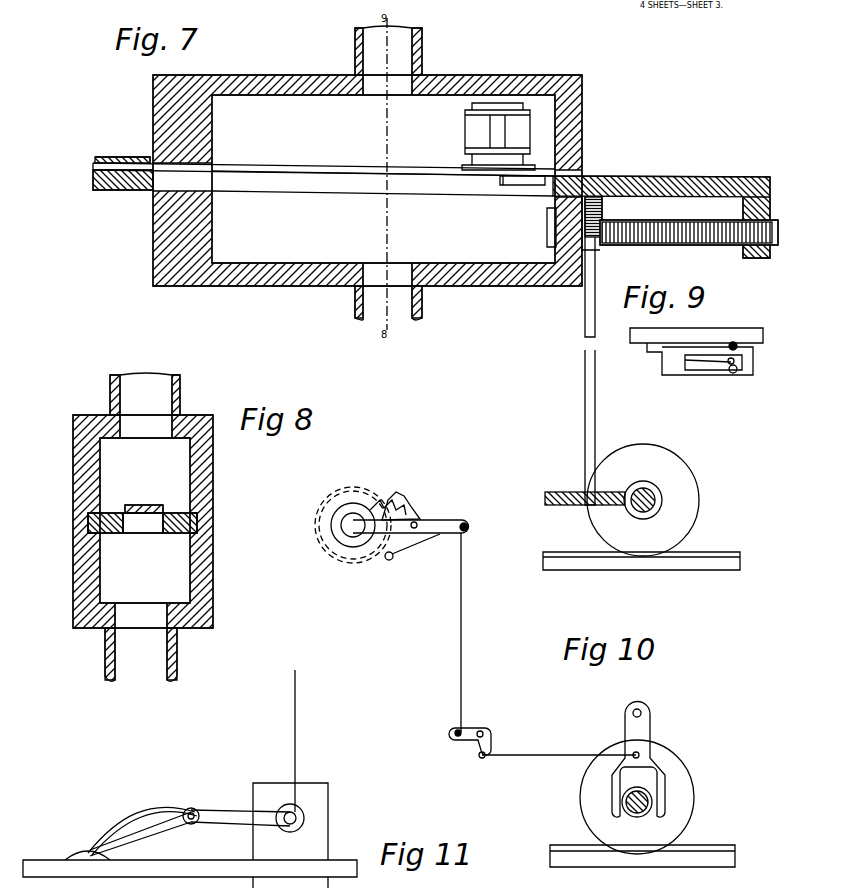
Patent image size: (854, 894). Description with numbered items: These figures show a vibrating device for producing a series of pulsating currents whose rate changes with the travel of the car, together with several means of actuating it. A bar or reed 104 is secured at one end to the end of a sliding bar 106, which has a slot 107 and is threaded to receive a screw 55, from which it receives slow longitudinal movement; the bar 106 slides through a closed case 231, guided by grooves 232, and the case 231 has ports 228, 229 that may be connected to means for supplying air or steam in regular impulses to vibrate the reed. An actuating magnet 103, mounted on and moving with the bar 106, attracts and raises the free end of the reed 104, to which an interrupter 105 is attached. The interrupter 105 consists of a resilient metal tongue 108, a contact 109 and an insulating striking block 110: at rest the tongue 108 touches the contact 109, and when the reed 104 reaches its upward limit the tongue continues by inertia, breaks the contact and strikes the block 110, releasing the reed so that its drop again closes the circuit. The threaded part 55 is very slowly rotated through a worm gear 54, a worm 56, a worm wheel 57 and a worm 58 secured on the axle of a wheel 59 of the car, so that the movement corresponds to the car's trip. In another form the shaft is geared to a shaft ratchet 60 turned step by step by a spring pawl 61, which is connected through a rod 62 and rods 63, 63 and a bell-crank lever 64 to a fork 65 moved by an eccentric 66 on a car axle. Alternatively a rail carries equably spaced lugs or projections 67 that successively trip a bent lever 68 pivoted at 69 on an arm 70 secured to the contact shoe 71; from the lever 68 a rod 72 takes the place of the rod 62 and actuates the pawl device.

In FIG. 7, the worm gear 54 is at (603, 212).
In FIG. 7, the threaded part 55 is at (689, 222).
In FIG. 7, the worm 56 is at (598, 238).
In FIG. 7, the worm wheel 57 is at (572, 505).
In FIG. 7, the worm 58 is at (641, 510).
In FIG. 7, the wheel 59 is at (693, 515).
In FIG. 7, the shaft ratchet 60 is at (368, 548).
In FIG. 7, the spring pawl 61 is at (416, 521).
In FIG. 7, the rod 62 is at (460, 665).
In FIG. 10, the rods 63 is at (535, 756).
In FIG. 10, the bell-crank lever 64 is at (489, 736).
In FIG. 10, the fork 65 is at (648, 732).
In FIG. 10, the eccentric 66 is at (626, 802).
In FIG. 11, the lugs or projections 67 is at (78, 856).
In FIG. 11, the bent lever 68 is at (190, 833).
In FIG. 11, the pivot 69 is at (191, 808).
In FIG. 11, the arm 70 is at (142, 823).
In FIG. 11, the contact shoe 71 is at (301, 835).
In FIG. 11, the rod 72 is at (295, 733).
In FIG. 7, the actuating magnet 103 is at (472, 124).
In FIG. 9, the actuating magnet 103 is at (697, 376).
In FIG. 7, the vibrating bar or reed 104 is at (294, 165).
In FIG. 8, the vibrating bar or reed 104 is at (162, 505).
In FIG. 9, the vibrating bar or reed 104 is at (705, 334).
In FIG. 7, the interrupter 105 is at (528, 185).
In FIG. 7, the sliding bar 106 is at (648, 168).
In FIG. 8, the sliding bar 106 is at (183, 532).
In FIG. 8, the slot 107 is at (137, 518).
In FIG. 9, the resilient metal tongue 108 is at (737, 361).
In FIG. 9, the contact 109 is at (734, 373).
In FIG. 9, the insulating striking block 110 is at (736, 343).
In FIG. 7, the port 228 is at (403, 65).
In FIG. 8, the port 228 is at (125, 390).
In FIG. 7, the port 229 is at (406, 305).
In FIG. 8, the port 229 is at (120, 652).
In FIG. 7, the closed case 231 is at (215, 275).
In FIG. 8, the closed case 231 is at (205, 530).
In FIG. 8, the grooves 232 is at (88, 523).